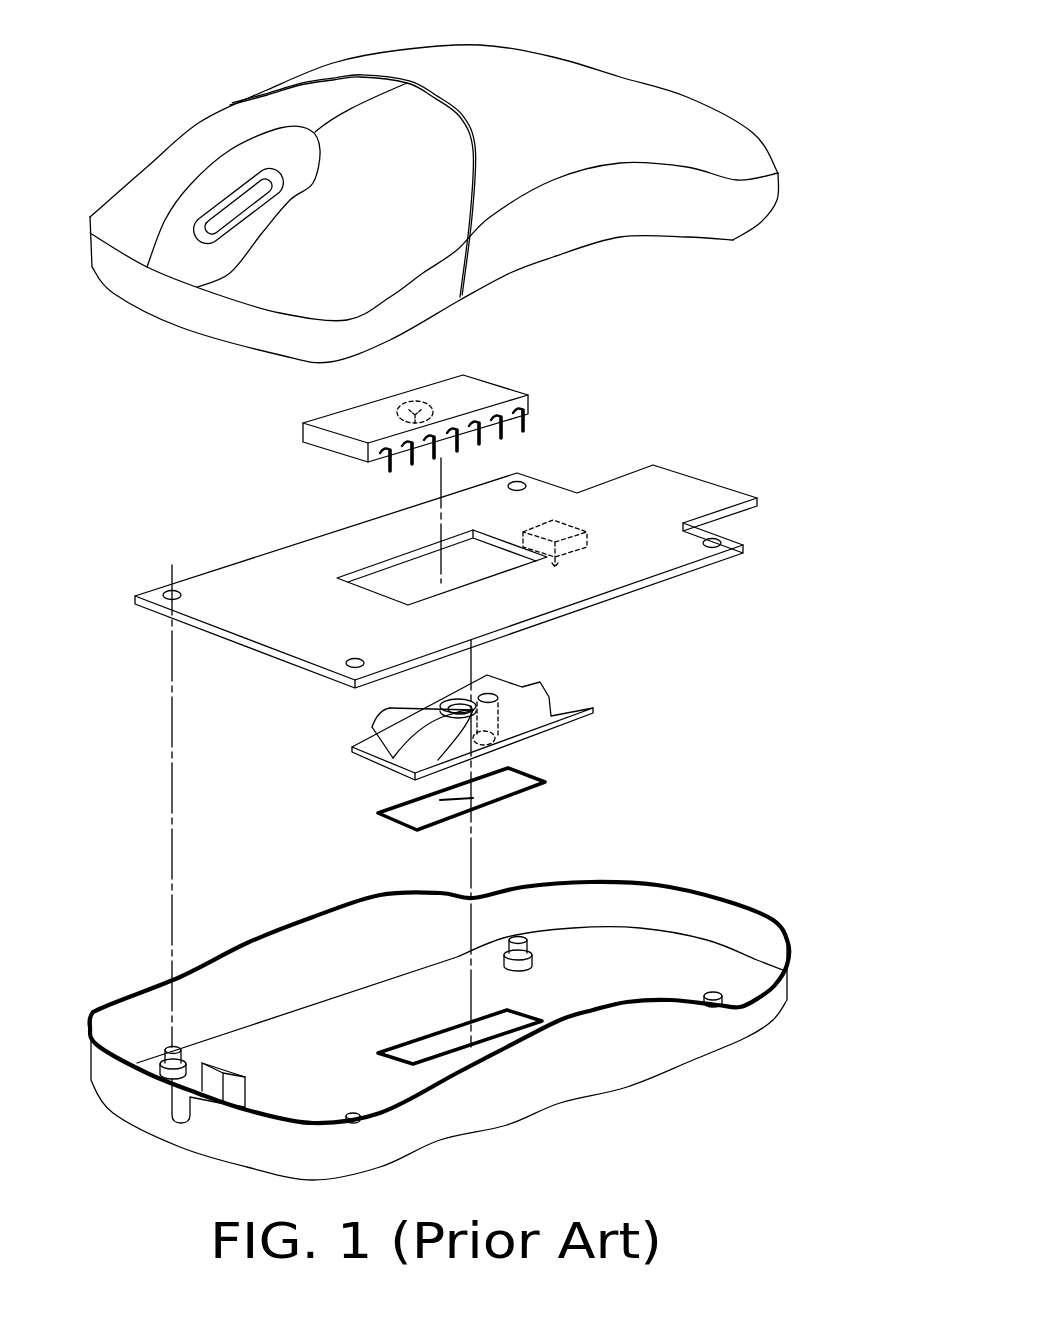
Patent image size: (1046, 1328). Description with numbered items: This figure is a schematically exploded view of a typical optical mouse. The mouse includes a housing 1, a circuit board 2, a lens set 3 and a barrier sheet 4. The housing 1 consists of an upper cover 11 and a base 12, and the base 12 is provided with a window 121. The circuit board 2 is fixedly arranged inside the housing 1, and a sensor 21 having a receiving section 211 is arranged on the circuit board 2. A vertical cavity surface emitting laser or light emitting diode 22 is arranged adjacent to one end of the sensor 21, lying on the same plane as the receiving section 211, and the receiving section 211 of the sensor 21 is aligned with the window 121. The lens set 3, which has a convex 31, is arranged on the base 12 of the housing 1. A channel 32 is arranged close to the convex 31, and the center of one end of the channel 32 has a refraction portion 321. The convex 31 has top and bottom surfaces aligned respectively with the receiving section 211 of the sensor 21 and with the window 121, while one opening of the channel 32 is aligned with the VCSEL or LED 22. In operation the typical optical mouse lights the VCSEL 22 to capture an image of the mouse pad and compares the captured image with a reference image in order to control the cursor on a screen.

The housing 1 is at (693, 97).
The upper cover 11 is at (180, 153).
The base 12 is at (277, 955).
The window 121 is at (433, 1047).
The circuit board 2 is at (672, 500).
The sensor 21 is at (325, 442).
The receiving section 211 is at (427, 408).
The vertical cavity surface emitting laser (VCSEL) or light emitting diode (LED) 22 is at (567, 557).
The lens set 3 is at (373, 723).
The convex 31 is at (387, 763).
The channel 32 is at (490, 697).
The refraction portion 321 is at (495, 728).
The barrier sheet 4 is at (493, 800).